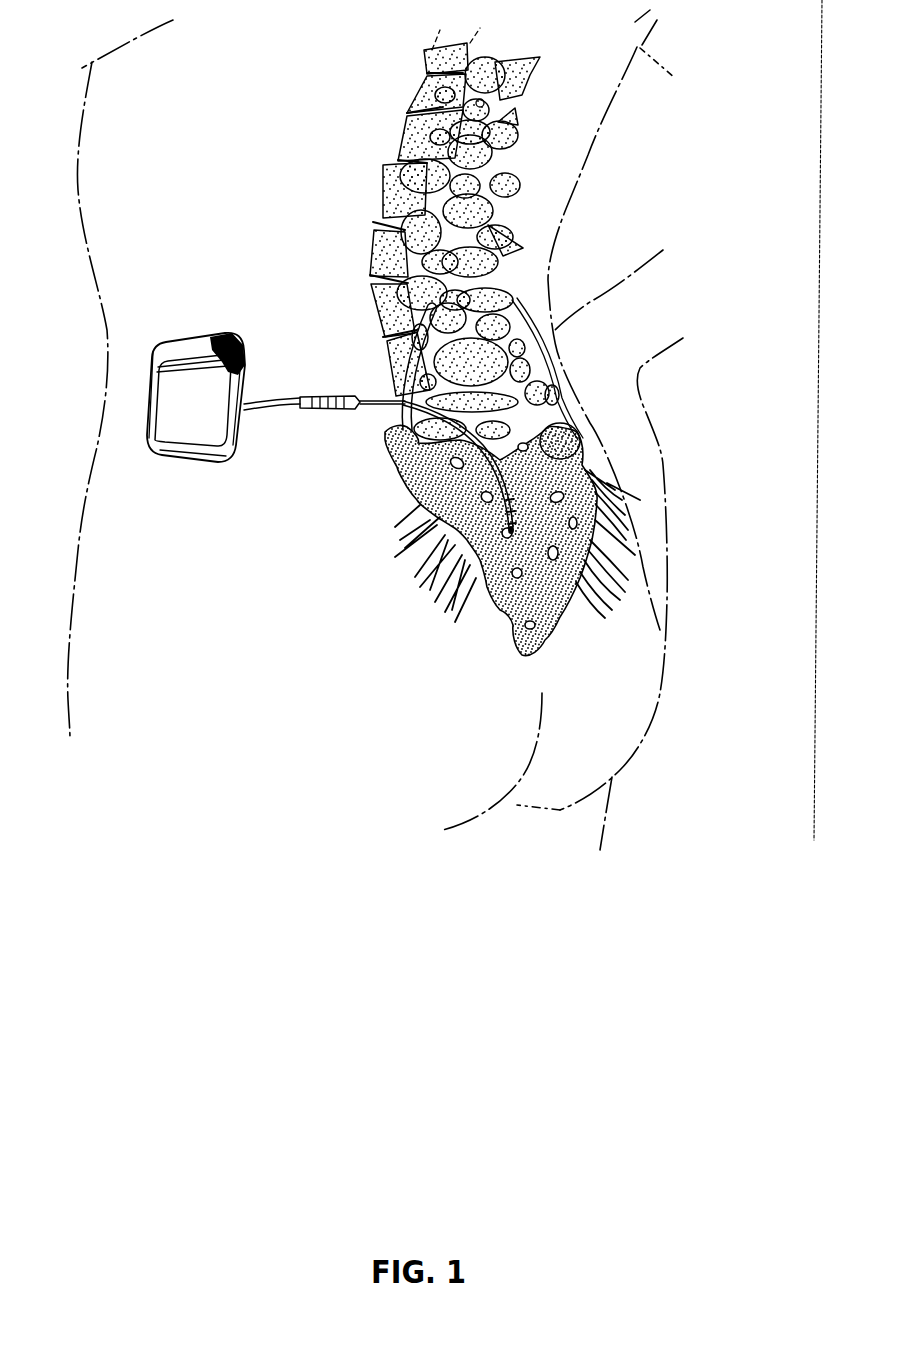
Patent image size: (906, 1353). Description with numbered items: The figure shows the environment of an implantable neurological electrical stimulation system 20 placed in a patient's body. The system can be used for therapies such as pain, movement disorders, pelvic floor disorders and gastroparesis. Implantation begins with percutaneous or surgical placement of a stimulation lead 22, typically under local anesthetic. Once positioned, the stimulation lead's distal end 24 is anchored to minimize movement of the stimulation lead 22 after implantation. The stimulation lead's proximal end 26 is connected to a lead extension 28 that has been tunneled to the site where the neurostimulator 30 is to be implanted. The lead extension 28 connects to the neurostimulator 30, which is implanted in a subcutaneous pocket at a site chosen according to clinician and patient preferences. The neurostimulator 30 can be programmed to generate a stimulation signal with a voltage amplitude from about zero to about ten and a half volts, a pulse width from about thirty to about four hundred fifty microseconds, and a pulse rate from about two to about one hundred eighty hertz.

The implantable neurological electrical stimulation system 20 is at (213, 188).
The stimulation lead 22 is at (515, 438).
The distal end of the stimulation lead 24 is at (473, 553).
The proximal end of the stimulation lead 26 is at (384, 404).
The lead extension 28 is at (332, 406).
The neurostimulator 30 is at (183, 462).